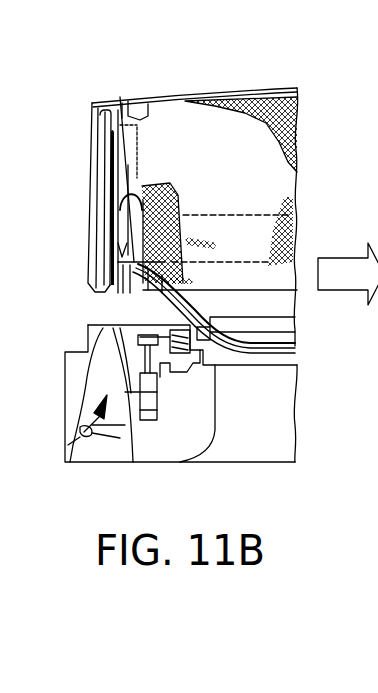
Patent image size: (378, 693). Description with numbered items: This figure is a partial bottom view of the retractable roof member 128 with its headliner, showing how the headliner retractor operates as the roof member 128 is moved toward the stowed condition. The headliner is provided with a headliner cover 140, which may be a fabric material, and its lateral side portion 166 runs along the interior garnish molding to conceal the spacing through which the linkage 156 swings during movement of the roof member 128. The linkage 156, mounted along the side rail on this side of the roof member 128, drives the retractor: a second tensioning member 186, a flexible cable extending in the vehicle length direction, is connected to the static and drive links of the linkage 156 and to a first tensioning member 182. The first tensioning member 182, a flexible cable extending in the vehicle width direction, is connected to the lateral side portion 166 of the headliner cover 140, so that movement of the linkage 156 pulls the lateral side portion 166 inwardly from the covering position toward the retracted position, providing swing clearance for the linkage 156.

The retractable roof member 128 is at (317, 109).
The headliner cover 140 is at (268, 181).
The first tensioning member 182 is at (197, 209).
The lateral side portion 166 is at (152, 162).
The second tensioning member 186 is at (110, 252).
The linkage 156 is at (82, 434).